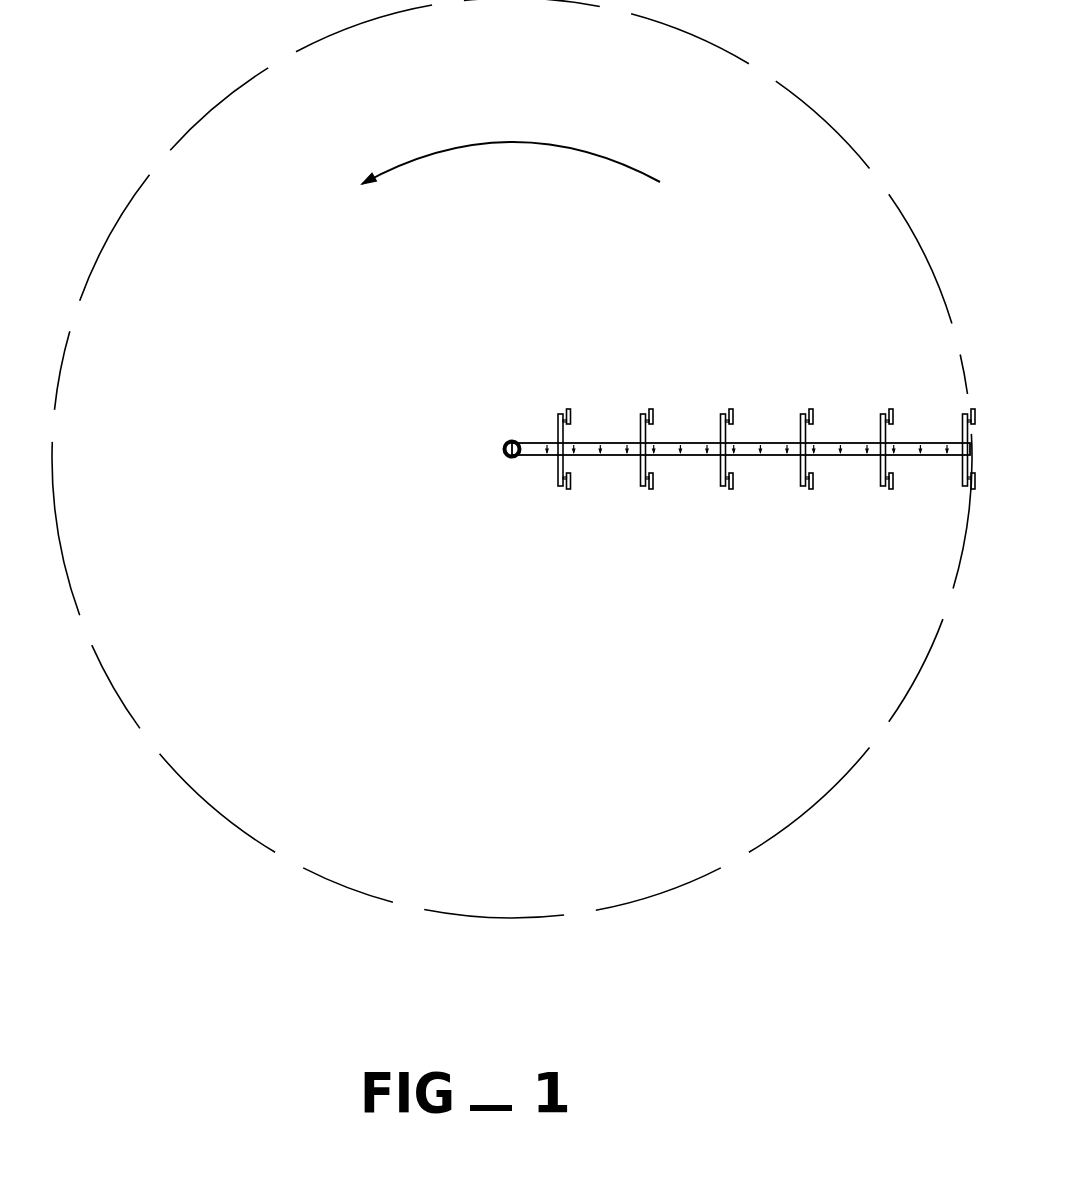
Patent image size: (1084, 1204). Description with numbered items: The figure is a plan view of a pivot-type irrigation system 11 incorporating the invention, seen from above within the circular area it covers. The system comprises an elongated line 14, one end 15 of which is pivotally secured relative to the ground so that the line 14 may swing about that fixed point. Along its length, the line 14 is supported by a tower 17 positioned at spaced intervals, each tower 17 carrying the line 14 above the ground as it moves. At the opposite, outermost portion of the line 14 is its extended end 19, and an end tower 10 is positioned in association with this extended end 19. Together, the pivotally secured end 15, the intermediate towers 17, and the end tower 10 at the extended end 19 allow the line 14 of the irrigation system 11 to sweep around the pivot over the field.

The end tower 10 is at (960, 496).
The irrigation system 11 is at (642, 553).
The line 14 is at (753, 458).
The end 15 is at (505, 442).
The tower 17 is at (646, 400).
The extended end 19 is at (967, 448).